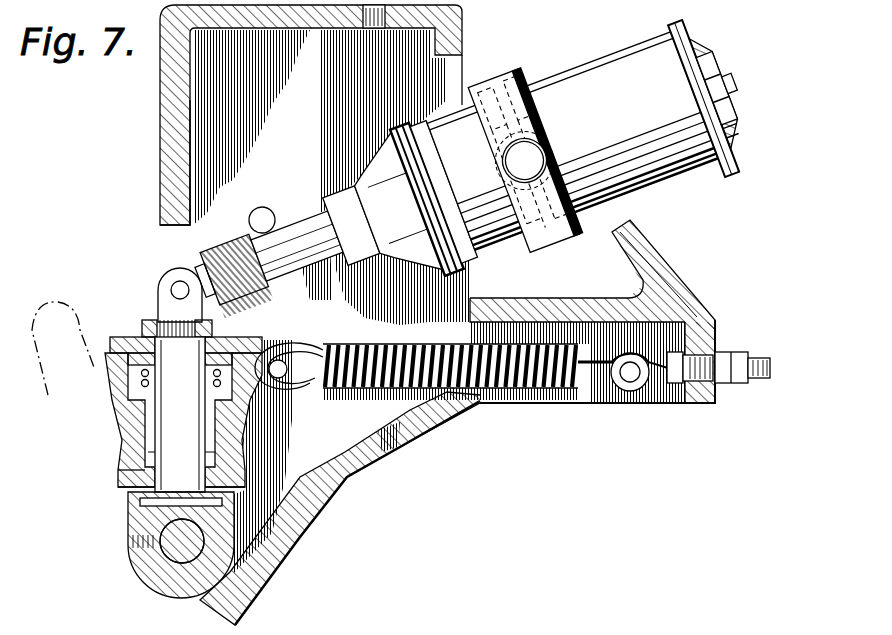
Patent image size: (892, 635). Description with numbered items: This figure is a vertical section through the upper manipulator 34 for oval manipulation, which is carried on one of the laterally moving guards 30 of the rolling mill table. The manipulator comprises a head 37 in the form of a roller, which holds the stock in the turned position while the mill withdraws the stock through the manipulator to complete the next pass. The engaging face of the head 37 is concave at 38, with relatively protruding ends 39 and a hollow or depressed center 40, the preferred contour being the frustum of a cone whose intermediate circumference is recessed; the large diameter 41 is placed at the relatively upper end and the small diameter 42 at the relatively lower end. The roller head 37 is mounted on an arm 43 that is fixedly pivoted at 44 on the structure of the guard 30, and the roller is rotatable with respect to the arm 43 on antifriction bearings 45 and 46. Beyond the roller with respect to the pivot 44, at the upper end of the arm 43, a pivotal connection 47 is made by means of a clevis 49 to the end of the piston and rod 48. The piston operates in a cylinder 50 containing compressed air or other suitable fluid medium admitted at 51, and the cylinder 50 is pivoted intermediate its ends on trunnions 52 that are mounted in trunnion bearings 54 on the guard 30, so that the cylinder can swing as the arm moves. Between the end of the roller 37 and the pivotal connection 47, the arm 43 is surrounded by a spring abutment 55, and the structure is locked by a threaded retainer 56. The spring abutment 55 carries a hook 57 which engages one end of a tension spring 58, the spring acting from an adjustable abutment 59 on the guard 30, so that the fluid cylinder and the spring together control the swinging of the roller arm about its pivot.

The guard 30 is at (166, 92).
The upper manipulator 34 is at (166, 152).
The head 37 is at (123, 397).
The concave engaging face 38 is at (125, 438).
The protruding ends 39 is at (137, 362).
The depressed center 40 is at (117, 418).
The large diameter 41 is at (108, 352).
The small diameter 42 is at (123, 483).
The arm 43 is at (180, 414).
The pivot 44 is at (175, 562).
The antifriction bearing 45 is at (120, 472).
The antifriction bearing 46 is at (140, 380).
The pivotal connection 47 is at (172, 284).
The piston and rod 48 is at (315, 238).
The clevis 49 is at (205, 280).
The cylinder 50 is at (564, 150).
The fluid admission 51 is at (722, 89).
The trunnions 52 is at (524, 160).
The trunnion bearings 54 is at (525, 160).
The spring abutment 55 is at (285, 340).
The threaded retainer 56 is at (150, 320).
The hook 57 is at (292, 356).
The tension spring 58 is at (328, 387).
The adjustable abutment 59 is at (627, 387).